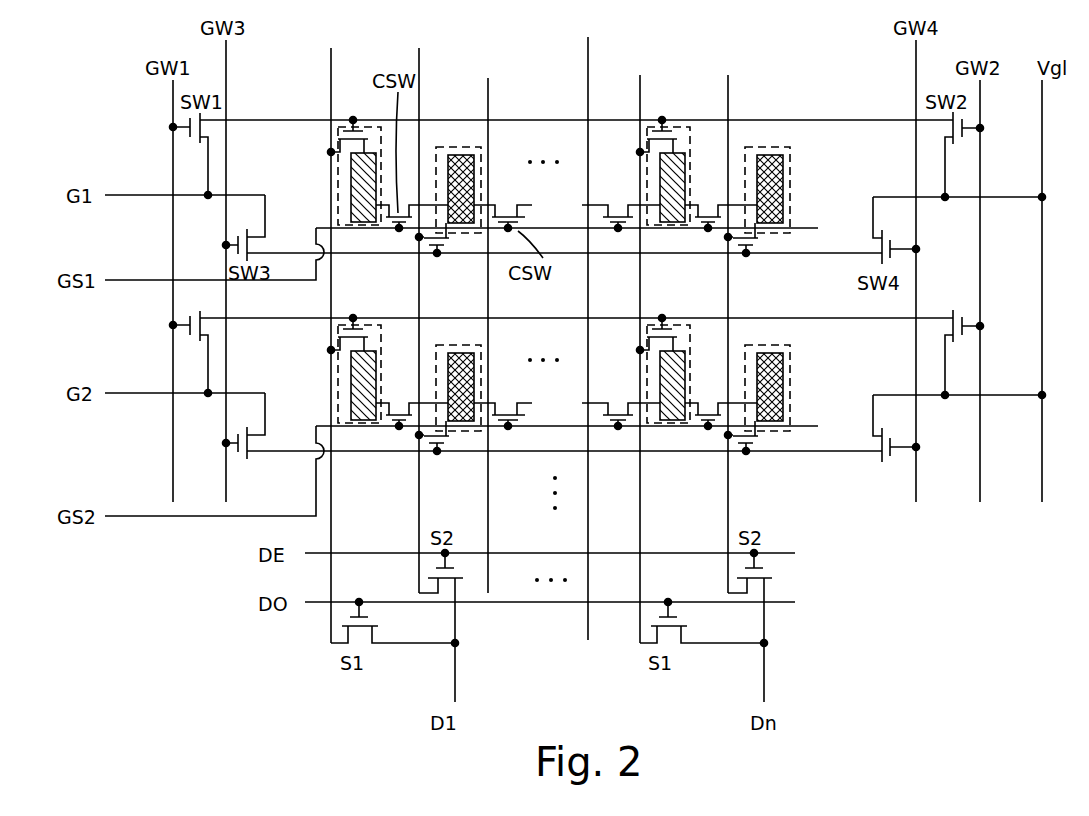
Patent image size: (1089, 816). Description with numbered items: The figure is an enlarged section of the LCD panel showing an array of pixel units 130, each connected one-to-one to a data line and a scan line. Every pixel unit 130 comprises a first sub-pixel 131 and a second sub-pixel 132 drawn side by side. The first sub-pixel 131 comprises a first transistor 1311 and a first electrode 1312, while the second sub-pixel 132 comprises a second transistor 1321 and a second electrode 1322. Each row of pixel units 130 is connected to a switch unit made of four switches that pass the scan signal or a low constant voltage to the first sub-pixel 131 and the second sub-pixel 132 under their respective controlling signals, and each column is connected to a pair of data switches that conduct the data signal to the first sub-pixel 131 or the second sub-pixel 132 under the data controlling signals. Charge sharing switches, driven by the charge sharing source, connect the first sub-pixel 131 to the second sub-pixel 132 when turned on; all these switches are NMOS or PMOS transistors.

The pixel unit 130 is at (321, 126).
The first sub-pixel 131 is at (337, 170).
The first transistor 1311 is at (357, 107).
The first electrode 1312 is at (352, 222).
The second sub-pixel 132 is at (484, 195).
The second transistor 1321 is at (441, 253).
The second electrode 1322 is at (452, 150).